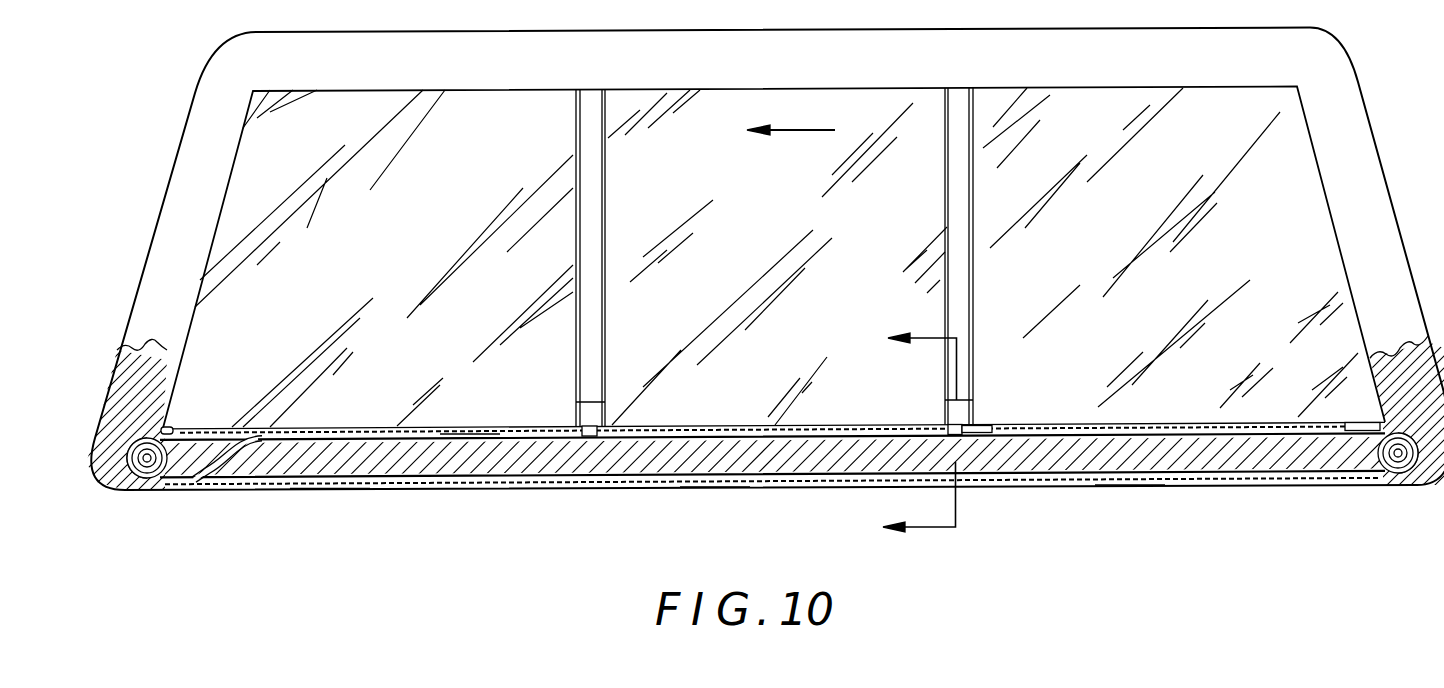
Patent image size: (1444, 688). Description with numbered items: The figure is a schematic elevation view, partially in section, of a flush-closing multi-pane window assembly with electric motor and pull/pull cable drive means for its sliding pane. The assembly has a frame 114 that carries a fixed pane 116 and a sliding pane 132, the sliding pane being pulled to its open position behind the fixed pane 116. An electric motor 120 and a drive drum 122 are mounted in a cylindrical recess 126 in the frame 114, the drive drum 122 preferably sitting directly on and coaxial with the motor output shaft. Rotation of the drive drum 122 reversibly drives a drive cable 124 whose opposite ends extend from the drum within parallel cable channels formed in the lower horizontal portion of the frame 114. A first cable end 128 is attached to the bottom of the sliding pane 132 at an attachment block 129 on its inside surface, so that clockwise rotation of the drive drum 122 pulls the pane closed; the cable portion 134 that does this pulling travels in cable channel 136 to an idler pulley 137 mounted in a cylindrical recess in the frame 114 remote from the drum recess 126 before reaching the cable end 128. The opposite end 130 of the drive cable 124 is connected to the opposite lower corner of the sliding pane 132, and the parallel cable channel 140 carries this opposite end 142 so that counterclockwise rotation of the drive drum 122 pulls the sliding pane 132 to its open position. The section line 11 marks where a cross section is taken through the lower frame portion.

The section line 11- 11 is at (903, 436).
The frame 114 is at (204, 114).
The fixed pane 116 is at (402, 250).
The electric motor 120 is at (168, 427).
The drive drum 122 is at (160, 490).
The drive cable 124 is at (328, 490).
The cylindrical recess 126 is at (123, 487).
The first cable end 128 is at (990, 424).
The attachment block 129 is at (947, 418).
The opposite end 130 is at (578, 431).
The sliding pane 132 is at (773, 250).
The cable portion 134 is at (712, 476).
The cable channel 136 is at (1128, 477).
The idler pulley 137 is at (1383, 487).
The parallel cable channel 140 is at (342, 436).
The opposite end 142 is at (467, 434).